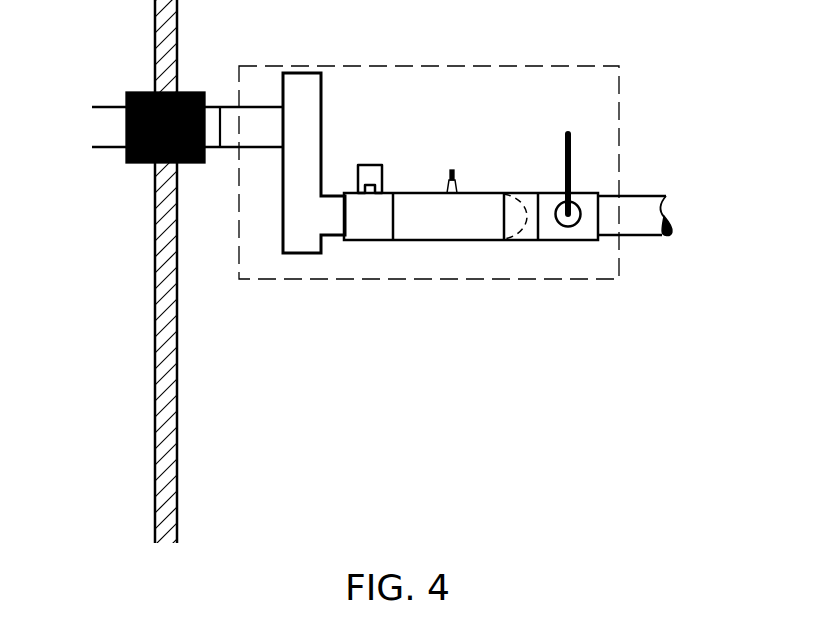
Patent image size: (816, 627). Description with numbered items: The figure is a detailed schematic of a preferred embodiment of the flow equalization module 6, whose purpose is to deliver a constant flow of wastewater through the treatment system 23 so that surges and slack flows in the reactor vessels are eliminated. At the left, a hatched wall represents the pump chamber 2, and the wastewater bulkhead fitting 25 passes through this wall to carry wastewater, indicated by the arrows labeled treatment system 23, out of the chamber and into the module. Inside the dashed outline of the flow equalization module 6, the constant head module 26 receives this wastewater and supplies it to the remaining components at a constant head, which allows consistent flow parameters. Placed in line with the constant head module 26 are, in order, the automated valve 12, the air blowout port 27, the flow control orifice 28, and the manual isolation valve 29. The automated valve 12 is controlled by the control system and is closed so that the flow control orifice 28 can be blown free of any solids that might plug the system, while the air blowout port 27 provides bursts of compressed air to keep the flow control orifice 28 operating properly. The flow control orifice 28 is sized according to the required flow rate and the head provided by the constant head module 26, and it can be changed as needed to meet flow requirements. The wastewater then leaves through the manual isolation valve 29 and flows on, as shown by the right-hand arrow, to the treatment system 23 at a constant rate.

The pump chamber 2 is at (152, 387).
The flow equalization module 6 is at (619, 102).
The automated valve 12 is at (371, 165).
The treatment system 23 is at (103, 128).
The wastewater bulkhead fitting 25 is at (201, 88).
The constant head module 26 is at (300, 73).
The air blowout port 27 is at (432, 193).
The flow control orifice 28 is at (517, 193).
The manual isolation valve 29 is at (584, 193).